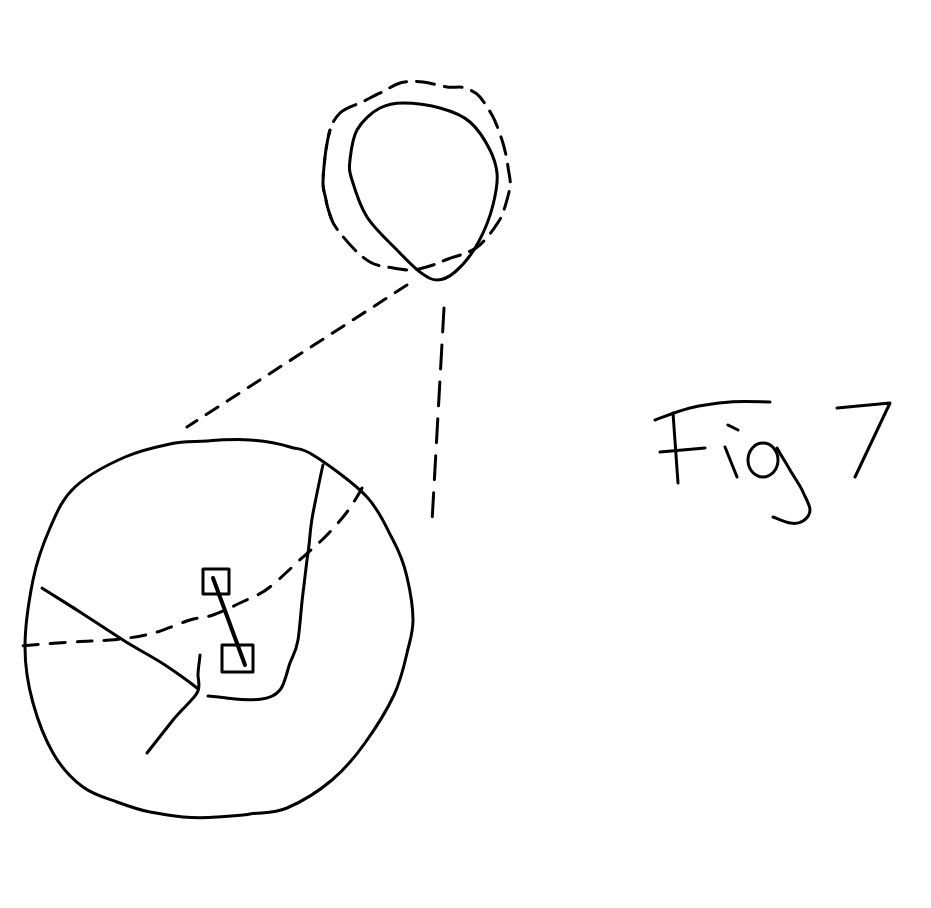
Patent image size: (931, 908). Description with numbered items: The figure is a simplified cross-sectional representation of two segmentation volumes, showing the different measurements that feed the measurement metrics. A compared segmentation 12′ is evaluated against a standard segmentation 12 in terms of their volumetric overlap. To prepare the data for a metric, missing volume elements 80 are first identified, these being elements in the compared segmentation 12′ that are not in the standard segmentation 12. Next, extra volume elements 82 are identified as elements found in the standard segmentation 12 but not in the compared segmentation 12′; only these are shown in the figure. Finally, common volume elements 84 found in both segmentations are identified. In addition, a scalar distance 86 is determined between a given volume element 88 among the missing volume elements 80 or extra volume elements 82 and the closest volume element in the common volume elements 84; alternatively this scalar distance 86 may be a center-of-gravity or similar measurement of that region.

The standard segmentation 12 is at (455, 86).
The compared segmentation 12′ is at (473, 131).
The missing volume elements 80 is at (333, 208).
The extra volume elements 82 is at (450, 267).
The common volume elements 84 is at (443, 200).
The scalar distance 86 is at (232, 628).
The volume element 88 is at (215, 568).